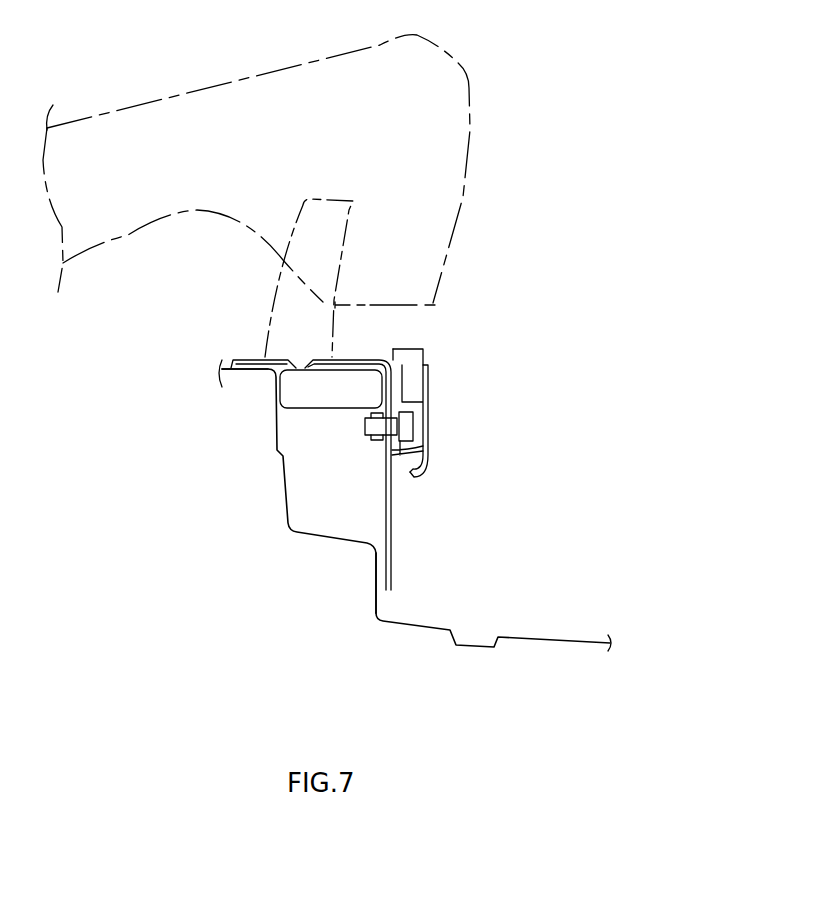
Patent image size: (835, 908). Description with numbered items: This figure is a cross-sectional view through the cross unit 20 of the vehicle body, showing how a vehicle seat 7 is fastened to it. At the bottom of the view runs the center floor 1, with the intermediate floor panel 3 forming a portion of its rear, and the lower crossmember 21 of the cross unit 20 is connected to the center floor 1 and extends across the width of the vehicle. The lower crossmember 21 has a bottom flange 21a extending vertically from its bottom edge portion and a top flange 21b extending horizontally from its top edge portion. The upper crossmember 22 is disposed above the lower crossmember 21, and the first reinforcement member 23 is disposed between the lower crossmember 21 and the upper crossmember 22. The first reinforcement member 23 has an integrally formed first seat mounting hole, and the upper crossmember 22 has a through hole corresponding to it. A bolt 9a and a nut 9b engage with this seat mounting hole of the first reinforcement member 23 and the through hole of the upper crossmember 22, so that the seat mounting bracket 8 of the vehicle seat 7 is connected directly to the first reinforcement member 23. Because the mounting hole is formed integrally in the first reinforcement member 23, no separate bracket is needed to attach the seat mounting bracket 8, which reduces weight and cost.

The center floor 1 is at (564, 616).
The intermediate floor panel 3 is at (430, 627).
The vehicle seat 7 is at (463, 196).
The seat mounting bracket 8 is at (358, 362).
The bolt 9a is at (407, 423).
The nut 9b is at (378, 442).
The cross unit 20 is at (260, 445).
The lower crossmember 21 is at (285, 488).
The bottom flange 21a is at (376, 562).
The top flange 21b is at (255, 372).
The upper crossmember 22 is at (347, 362).
The first reinforcement member 23 is at (313, 408).